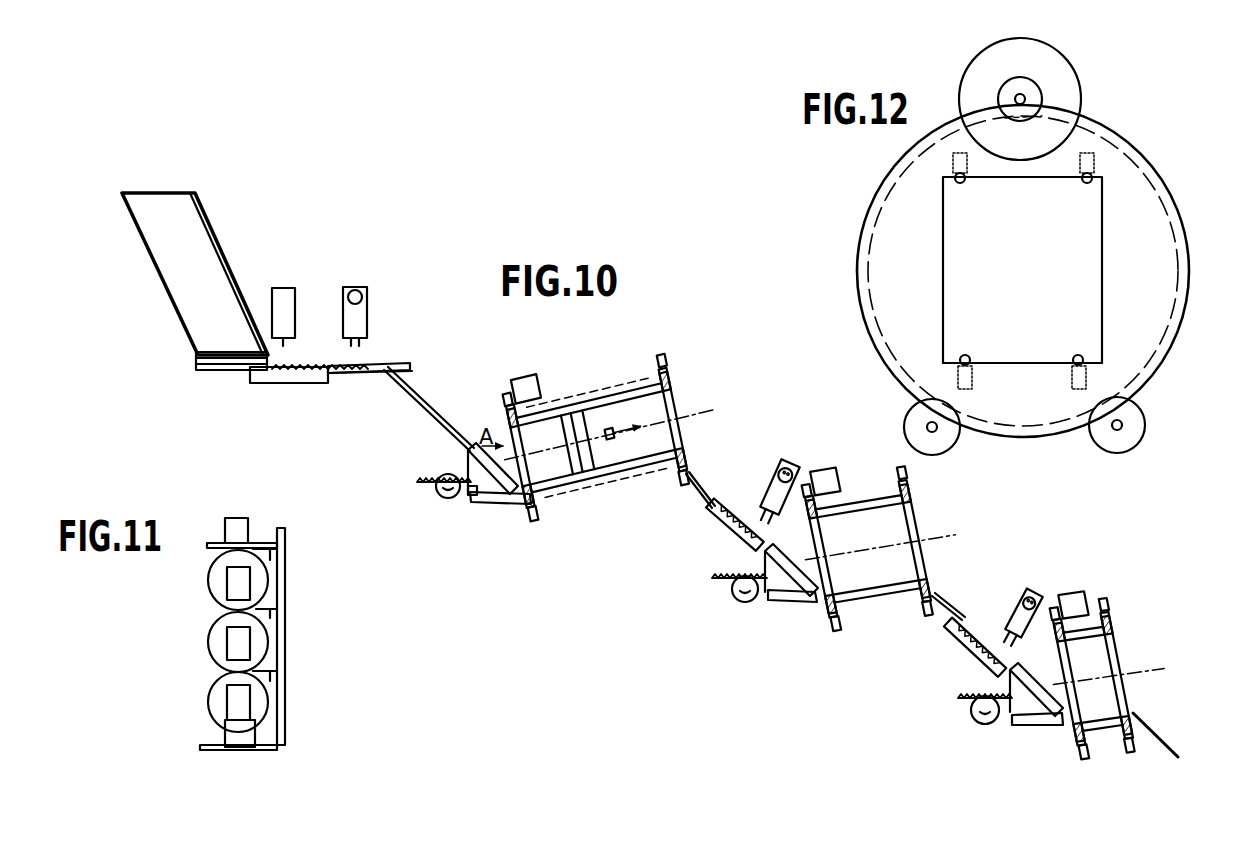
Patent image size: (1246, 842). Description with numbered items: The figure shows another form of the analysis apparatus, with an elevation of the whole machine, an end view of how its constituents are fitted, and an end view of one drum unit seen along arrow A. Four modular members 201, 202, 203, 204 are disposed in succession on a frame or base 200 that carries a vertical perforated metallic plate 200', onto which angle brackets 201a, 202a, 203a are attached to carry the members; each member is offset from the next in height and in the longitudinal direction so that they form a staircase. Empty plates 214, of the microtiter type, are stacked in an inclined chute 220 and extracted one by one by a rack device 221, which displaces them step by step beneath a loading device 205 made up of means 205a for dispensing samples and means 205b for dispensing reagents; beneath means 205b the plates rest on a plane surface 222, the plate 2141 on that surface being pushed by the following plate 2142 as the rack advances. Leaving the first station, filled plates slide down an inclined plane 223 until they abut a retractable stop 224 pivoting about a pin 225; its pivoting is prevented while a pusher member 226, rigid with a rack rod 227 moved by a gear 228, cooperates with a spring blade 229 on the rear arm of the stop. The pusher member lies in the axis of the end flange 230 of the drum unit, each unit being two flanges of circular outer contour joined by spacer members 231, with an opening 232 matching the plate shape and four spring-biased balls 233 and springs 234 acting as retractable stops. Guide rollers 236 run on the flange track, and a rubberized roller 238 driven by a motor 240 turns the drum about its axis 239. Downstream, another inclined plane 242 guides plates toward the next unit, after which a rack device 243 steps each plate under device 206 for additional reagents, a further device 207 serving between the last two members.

In FIG. 11, the frame or base 200 is at (212, 639).
In FIG. 11, the vertical perforated metallic plate 200' is at (318, 629).
In FIG. 10, the first modular member 201 is at (258, 284).
In FIG. 11, the angle bracket 201a is at (284, 560).
In FIG. 10, the second modular member 202 is at (586, 357).
In FIG. 11, the second modular member 202 is at (273, 586).
In FIG. 11, the angle bracket 202a is at (281, 616).
In FIG. 10, the third modular member 203 is at (850, 498).
In FIG. 11, the third modular member 203 is at (273, 651).
In FIG. 11, the angle bracket 203a is at (283, 681).
In FIG. 10, the fourth modular member 204 is at (1102, 604).
In FIG. 11, the fourth modular member 204 is at (276, 713).
In FIG. 10, the loading device 205 is at (368, 278).
In FIG. 10, the sample dispensing means 205a is at (288, 320).
In FIG. 10, the reagent dispensing means 205b is at (362, 320).
In FIG. 10, the additional reagent loading device 206 is at (789, 468).
In FIG. 10, the additional reagent loading device 207 is at (1038, 588).
In FIG. 10, the plate 214 is at (215, 372).
In FIG. 10, the plate 2141 is at (400, 367).
In FIG. 10, the plate 2142 is at (330, 376).
In FIG. 10, the inclined chute 220 is at (154, 288).
In FIG. 11, the inclined chute 220 is at (236, 520).
In FIG. 10, the rack device 221 is at (276, 383).
In FIG. 10, the plane surface 222 is at (373, 378).
In FIG. 10, the inclined plane 223 is at (426, 413).
In FIG. 10, the retractable stop 224 is at (496, 506).
In FIG. 10, the pin 225 is at (529, 510).
In FIG. 10, the pusher member 226 is at (466, 500).
In FIG. 10, the rack rod 227 is at (420, 484).
In FIG. 10, the gear 228 is at (440, 497).
In FIG. 10, the spring blade 229 is at (486, 508).
In FIG. 10, the end flange 230 is at (676, 386).
In FIG. 12, the end flange 230 is at (1157, 222).
In FIG. 10, the spacer member 231 is at (618, 403).
In FIG. 10, the opening 232 is at (692, 470).
In FIG. 12, the opening 232 is at (943, 275).
In FIG. 12, the ball 233 is at (964, 182).
In FIG. 12, the spring 234 is at (1097, 164).
In FIG. 12, the guide roller 236 is at (1133, 418).
In FIG. 12, the drive roller 238 is at (997, 95).
In FIG. 10, the axis 239 is at (690, 431).
In FIG. 12, the motor 240 is at (1069, 92).
In FIG. 10, the inclined plane 242 is at (700, 487).
In FIG. 10, the rack device 243 is at (716, 524).